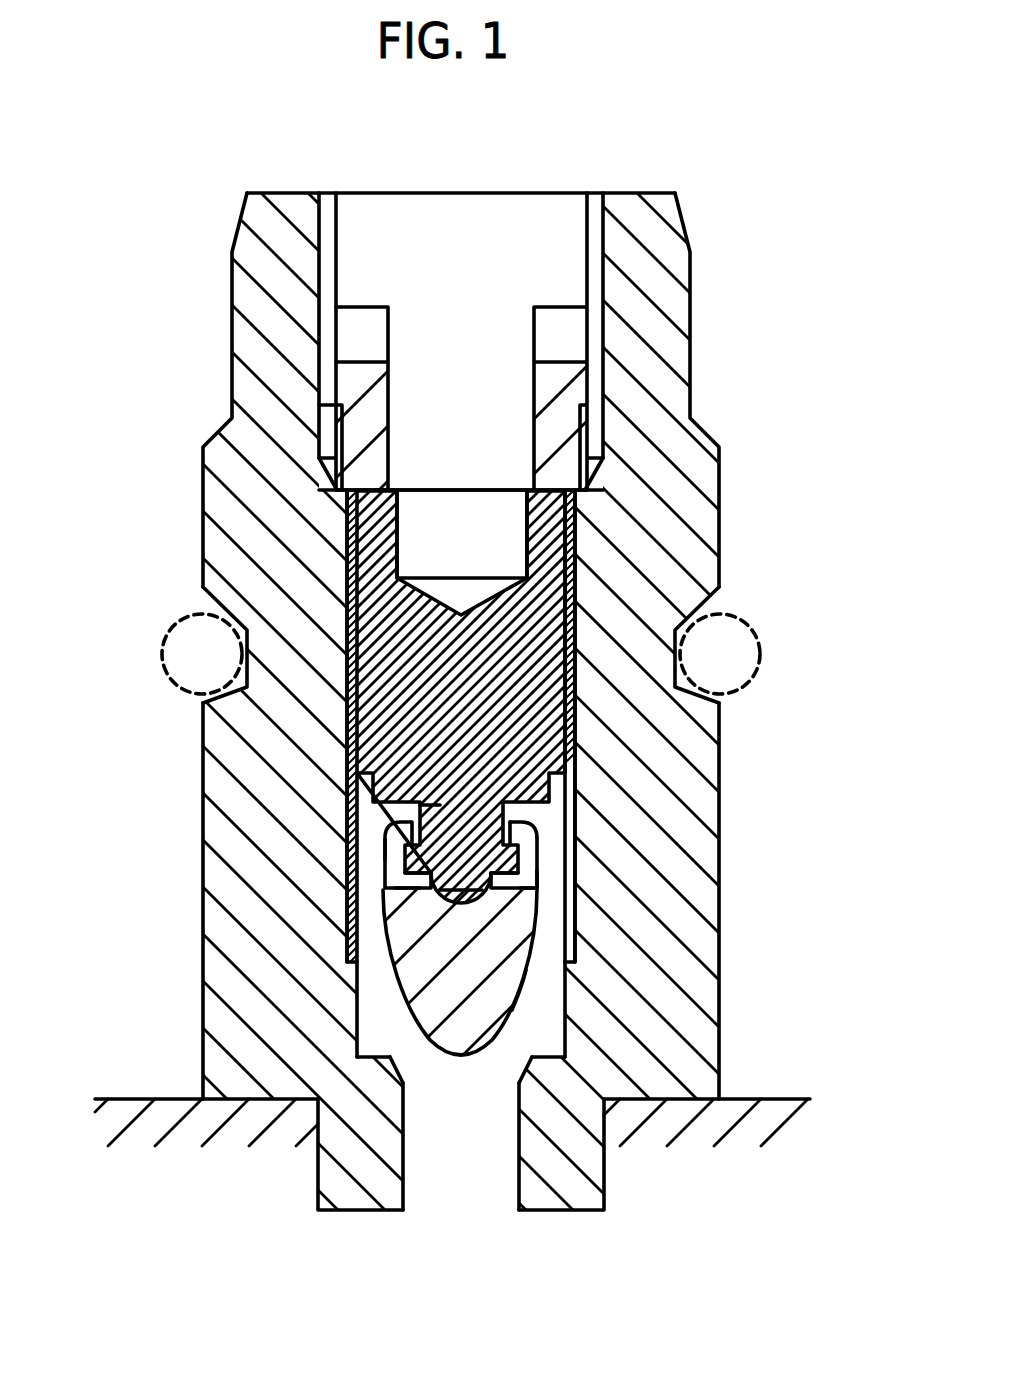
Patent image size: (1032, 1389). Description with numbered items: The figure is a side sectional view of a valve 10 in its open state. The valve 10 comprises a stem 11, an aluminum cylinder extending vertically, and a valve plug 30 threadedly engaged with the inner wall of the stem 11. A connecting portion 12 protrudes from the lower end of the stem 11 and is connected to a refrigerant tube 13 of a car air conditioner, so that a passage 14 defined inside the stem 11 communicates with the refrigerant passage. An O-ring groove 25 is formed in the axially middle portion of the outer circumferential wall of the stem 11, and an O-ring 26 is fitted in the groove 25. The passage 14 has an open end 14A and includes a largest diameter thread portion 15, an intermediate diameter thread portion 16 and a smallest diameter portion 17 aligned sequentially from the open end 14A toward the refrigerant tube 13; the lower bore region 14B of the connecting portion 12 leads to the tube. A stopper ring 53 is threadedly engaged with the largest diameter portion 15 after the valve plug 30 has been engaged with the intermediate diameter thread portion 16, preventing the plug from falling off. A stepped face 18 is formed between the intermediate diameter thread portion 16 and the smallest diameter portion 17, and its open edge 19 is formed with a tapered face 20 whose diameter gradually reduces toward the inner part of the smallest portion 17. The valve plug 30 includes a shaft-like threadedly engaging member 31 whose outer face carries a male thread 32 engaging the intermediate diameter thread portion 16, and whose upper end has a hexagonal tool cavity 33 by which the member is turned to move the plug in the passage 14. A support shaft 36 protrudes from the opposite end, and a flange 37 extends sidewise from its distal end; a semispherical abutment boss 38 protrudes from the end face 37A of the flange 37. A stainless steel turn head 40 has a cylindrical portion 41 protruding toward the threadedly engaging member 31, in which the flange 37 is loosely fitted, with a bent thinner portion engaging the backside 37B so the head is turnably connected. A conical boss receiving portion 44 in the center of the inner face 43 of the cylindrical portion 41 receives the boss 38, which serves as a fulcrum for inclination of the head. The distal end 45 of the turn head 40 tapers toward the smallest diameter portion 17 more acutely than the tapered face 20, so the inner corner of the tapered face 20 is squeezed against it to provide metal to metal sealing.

The valve 10 is at (752, 115).
The stem 11 is at (648, 192).
The connecting portion 12 is at (604, 1185).
The refrigerant tube 13 is at (133, 1100).
The passage 14 is at (450, 228).
The open end 14A is at (590, 192).
The lower bore 14B is at (515, 1210).
The largest diameter thread portion 15 is at (345, 250).
The intermediate diameter thread portion 16 is at (365, 845).
The smallest diameter portion 17 is at (405, 1150).
The stepped face 18 is at (392, 1060).
The open edge 19 is at (410, 1068).
The tapered face 20 is at (392, 1062).
The O-ring groove 25 is at (205, 700).
The O-ring 26 is at (162, 658).
The valve plug 30 is at (437, 478).
The threadedly engaging member 31 is at (578, 737).
The male thread 32 is at (576, 592).
The tool cavity 33 is at (527, 523).
The support shaft 36 is at (425, 805).
The flange 37 is at (540, 847).
The end face 37A is at (525, 885).
The backside 37B is at (530, 822).
The abutment boss 38 is at (540, 903).
The turn head 40 is at (468, 897).
The cylindrical portion 41 is at (397, 860).
The inner face 43 is at (410, 880).
The boss receiving portion 44 is at (452, 908).
The distal end 45 is at (512, 1010).
The stopper ring 53 is at (370, 300).